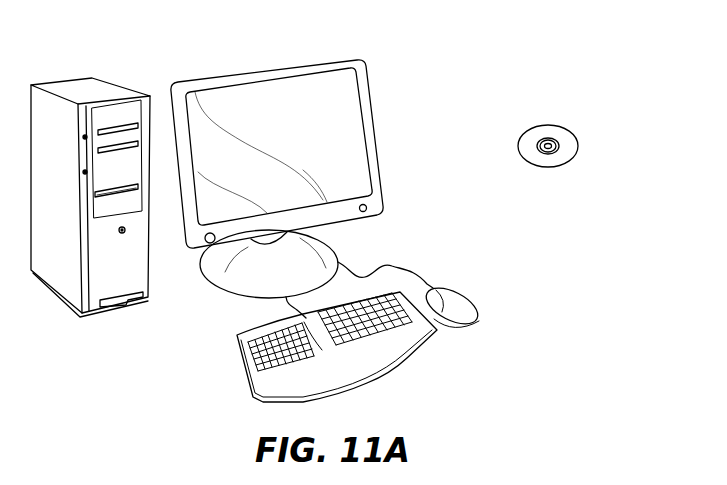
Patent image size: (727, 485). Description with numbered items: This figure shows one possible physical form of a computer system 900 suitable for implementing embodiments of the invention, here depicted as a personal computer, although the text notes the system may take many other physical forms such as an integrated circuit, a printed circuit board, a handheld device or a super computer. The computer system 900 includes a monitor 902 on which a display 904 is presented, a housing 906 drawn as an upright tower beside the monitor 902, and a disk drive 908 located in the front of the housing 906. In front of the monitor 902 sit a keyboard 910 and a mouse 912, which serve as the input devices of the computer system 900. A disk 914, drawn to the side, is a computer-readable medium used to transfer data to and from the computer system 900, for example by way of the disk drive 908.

The computer system 900 is at (484, 43).
The display monitor 902 is at (378, 152).
The display screen 904 is at (333, 97).
The computer tower / processing unit 906 is at (77, 86).
The media drive 908 is at (133, 195).
The keyboard 910 is at (248, 370).
The mouse 912 is at (470, 300).
The optical disc 914 is at (556, 126).